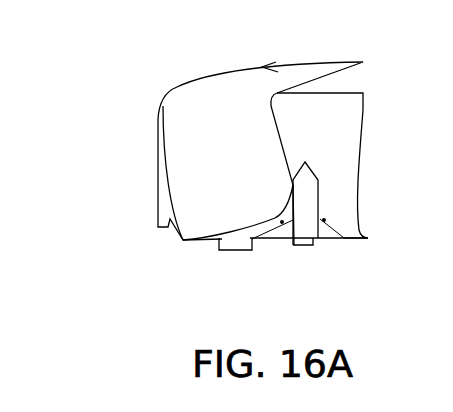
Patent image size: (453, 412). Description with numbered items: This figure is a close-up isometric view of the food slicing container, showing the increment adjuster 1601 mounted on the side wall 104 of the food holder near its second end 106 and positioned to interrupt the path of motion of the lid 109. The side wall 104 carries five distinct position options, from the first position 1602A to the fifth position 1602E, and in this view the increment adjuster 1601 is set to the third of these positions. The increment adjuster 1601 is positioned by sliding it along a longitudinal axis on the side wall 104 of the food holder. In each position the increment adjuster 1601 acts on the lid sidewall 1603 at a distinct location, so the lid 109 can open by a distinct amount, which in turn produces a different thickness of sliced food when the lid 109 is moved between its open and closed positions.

The side wall 104 is at (355, 122).
The second end 106 is at (138, 92).
The lid 109 is at (197, 75).
The increment adjuster 1601 is at (312, 245).
The first distinct position 1602A is at (260, 240).
The fifth distinct position 1602E is at (355, 245).
The lid sidewall 1603 is at (185, 240).